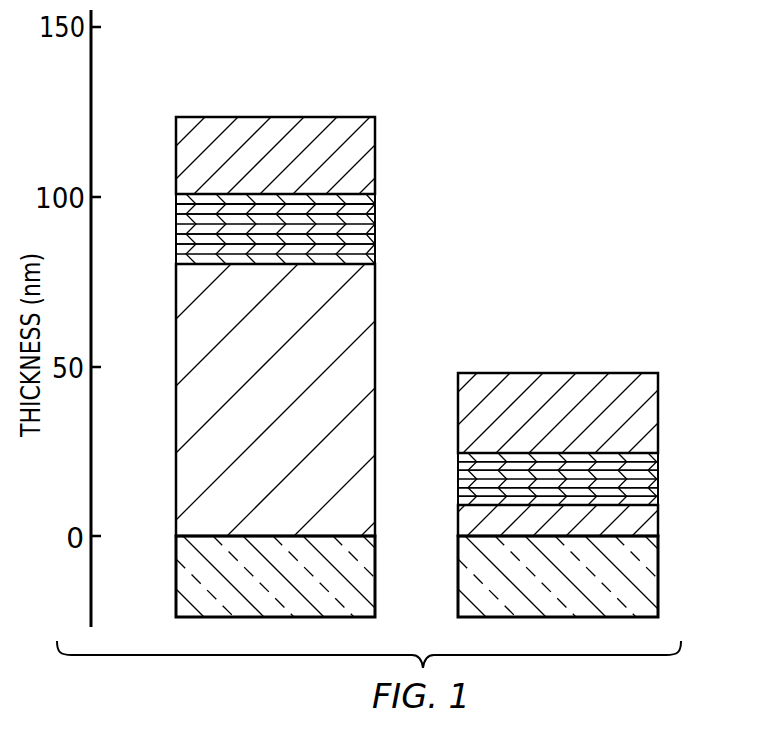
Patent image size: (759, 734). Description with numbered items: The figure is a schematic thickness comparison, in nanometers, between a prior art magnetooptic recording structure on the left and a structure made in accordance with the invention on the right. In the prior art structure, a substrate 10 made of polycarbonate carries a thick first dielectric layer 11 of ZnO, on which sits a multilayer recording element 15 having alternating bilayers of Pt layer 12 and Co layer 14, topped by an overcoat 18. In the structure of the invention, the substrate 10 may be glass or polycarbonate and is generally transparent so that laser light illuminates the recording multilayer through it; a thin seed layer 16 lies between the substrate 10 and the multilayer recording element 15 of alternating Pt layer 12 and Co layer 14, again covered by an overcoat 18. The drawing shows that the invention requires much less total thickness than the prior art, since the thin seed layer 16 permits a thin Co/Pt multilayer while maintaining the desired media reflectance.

The substrate 10 is at (176, 580).
The first dielectric layer 11 is at (176, 373).
The Pt layer 12 is at (176, 199).
The Co layer 14 is at (176, 209).
The multilayer recording element 15 is at (390, 197).
The seed layer 16 is at (651, 524).
The overcoat 18 is at (176, 147).